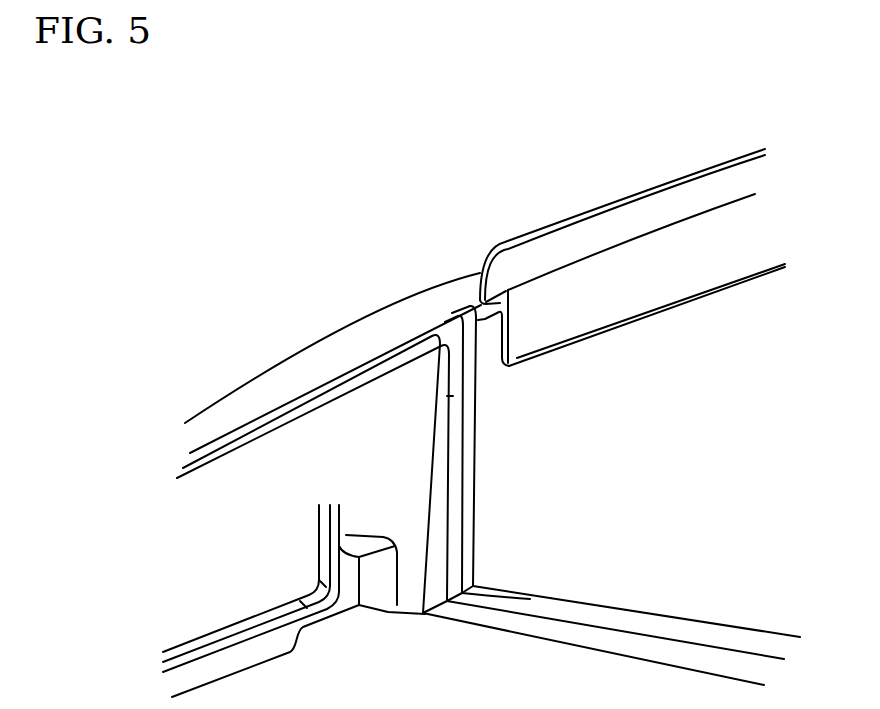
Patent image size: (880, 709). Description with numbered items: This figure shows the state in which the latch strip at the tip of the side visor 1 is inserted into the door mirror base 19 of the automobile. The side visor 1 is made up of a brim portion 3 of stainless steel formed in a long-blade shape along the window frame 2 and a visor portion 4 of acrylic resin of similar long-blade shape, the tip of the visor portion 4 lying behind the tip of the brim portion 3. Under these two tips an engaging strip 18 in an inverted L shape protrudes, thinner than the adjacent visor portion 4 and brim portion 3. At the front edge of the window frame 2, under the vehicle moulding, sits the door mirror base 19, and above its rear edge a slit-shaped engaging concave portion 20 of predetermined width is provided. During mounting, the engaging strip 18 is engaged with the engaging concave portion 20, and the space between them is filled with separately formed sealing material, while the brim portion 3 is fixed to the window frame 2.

The side visor 1 is at (570, 192).
The window frame 2 is at (313, 350).
The brim portion 3 is at (647, 208).
The visor portion 4 is at (698, 278).
The engaging strip 18 is at (497, 367).
The door mirror base 19 is at (410, 607).
The engaging concave portion 20 is at (452, 330).